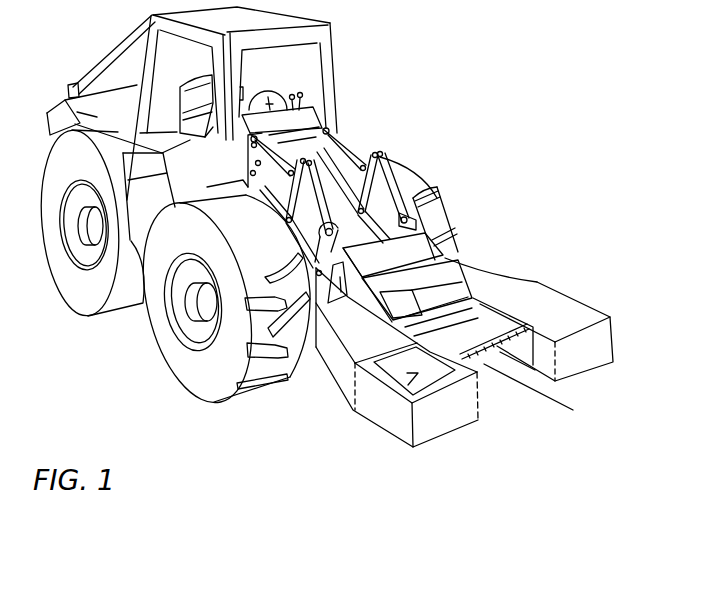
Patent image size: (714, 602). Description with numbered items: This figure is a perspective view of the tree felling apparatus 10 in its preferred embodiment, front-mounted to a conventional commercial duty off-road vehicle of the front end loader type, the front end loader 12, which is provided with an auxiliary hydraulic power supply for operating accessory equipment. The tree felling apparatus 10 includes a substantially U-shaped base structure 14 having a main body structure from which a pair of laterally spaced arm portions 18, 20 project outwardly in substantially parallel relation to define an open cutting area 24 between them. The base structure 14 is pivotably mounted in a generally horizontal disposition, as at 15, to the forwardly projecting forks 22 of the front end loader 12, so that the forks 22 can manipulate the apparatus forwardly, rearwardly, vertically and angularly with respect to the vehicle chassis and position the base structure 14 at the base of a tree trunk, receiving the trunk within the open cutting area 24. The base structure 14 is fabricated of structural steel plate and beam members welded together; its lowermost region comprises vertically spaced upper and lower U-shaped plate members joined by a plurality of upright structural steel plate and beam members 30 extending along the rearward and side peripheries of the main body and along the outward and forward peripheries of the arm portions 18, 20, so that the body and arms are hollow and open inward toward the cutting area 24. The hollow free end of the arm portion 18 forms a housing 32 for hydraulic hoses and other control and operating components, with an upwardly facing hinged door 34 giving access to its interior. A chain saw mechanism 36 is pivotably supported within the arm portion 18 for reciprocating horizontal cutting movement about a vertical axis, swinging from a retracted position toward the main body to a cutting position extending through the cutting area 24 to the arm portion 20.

The tree felling apparatus 10 is at (398, 457).
The front end loader 12 is at (110, 343).
The base structure 14 is at (348, 412).
The pivotable mounting 15 is at (324, 232).
The arm portion 18 is at (441, 420).
The arm portion 20 is at (590, 352).
The forks 22 is at (368, 242).
The open cutting area 24 is at (515, 399).
The upright structural steel plate and beam members 30 is at (340, 367).
The housing 32 is at (459, 402).
The hinged door 34 is at (406, 374).
The chain saw mechanism 36 is at (481, 354).